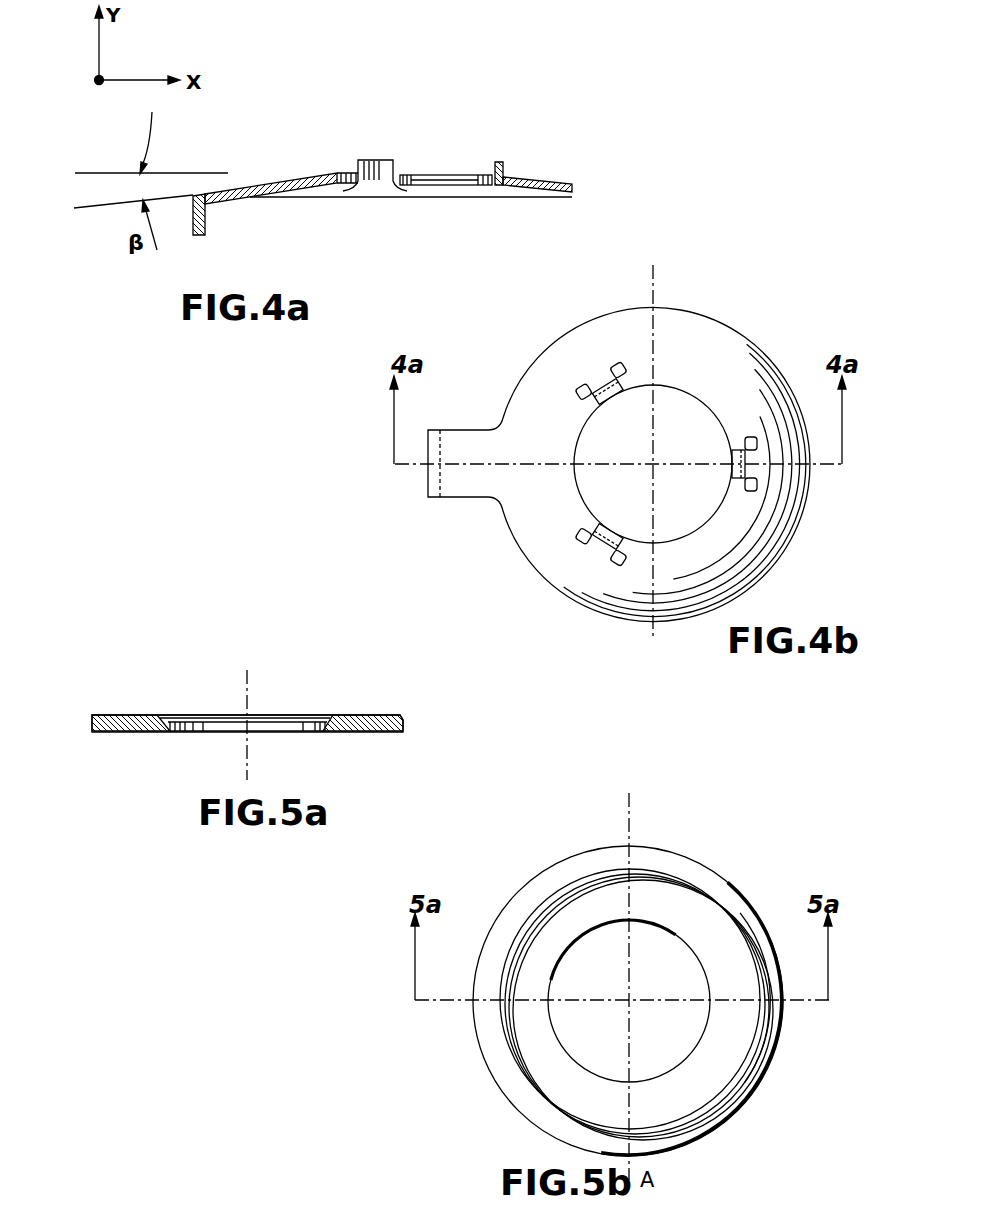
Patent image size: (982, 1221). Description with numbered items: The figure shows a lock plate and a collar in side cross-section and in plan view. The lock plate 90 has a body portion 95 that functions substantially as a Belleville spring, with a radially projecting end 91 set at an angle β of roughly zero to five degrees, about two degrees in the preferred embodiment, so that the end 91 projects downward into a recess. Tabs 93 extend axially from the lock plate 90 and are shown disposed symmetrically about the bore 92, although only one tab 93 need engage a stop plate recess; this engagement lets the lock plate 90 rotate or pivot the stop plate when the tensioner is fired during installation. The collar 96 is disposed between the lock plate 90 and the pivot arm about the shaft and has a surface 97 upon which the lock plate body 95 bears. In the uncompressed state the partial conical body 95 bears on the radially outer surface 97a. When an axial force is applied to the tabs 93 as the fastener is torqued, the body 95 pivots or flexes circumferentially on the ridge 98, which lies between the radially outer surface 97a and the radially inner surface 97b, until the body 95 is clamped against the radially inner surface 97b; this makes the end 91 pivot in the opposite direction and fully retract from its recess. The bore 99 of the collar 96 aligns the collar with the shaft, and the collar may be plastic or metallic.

In FIG. 4a, the lock plate 90 is at (292, 175).
In FIG. 4a, the end 91 is at (207, 220).
In FIG. 4b, the end 91 is at (432, 498).
In FIG. 4a, the bore 92 is at (434, 168).
In FIG. 4b, the bore 92 is at (707, 504).
In FIG. 4a, the tabs 93 is at (360, 170).
In FIG. 4b, the tabs 93 is at (600, 387).
In FIG. 4b, the body portion 95 is at (703, 350).
In FIG. 5a, the collar 96 is at (406, 714).
In FIG. 5a, the surface 97 is at (125, 714).
In FIG. 5b, the surface 97 is at (567, 912).
In FIG. 5b, the radially outer surface 97a is at (672, 867).
In FIG. 5b, the radially inner surface 97b is at (735, 1043).
In FIG. 5a, the ridge 98 is at (377, 714).
In FIG. 5b, the ridge 98 is at (693, 890).
In FIG. 5b, the bore 99 is at (682, 1047).